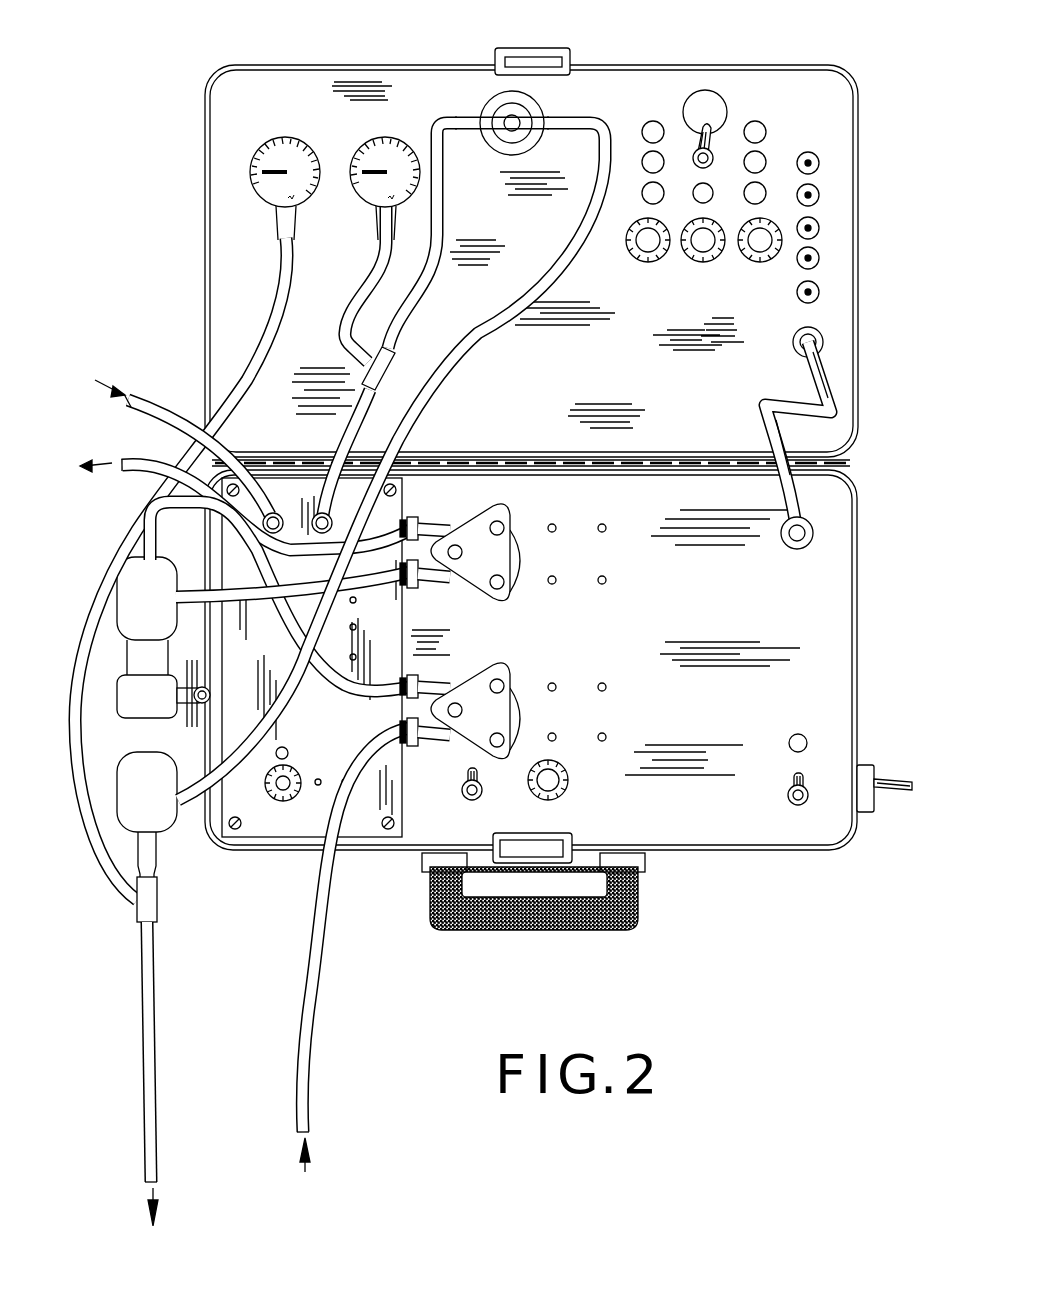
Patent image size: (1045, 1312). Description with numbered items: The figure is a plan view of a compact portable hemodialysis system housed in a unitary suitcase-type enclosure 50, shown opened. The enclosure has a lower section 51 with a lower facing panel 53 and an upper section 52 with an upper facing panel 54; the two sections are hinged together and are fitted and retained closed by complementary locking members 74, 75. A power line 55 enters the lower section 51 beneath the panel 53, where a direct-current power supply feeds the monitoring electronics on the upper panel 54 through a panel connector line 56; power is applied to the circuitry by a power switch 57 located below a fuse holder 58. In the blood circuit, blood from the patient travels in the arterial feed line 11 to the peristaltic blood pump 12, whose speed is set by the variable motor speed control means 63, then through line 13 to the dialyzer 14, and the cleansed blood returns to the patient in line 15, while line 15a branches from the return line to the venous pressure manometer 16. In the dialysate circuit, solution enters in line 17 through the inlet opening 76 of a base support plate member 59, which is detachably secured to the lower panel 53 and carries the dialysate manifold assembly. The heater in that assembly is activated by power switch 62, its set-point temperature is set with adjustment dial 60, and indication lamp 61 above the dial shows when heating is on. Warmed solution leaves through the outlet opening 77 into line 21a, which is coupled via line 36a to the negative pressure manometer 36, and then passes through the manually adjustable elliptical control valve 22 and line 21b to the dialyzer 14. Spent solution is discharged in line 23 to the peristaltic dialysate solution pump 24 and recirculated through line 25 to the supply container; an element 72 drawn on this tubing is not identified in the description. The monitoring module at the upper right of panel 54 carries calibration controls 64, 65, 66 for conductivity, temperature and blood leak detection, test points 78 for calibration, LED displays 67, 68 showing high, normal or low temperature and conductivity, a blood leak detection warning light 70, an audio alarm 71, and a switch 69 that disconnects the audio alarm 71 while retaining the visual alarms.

The arterial feed line 11 is at (312, 1020).
The peristaltic blood pump 12 is at (498, 670).
The line 13 is at (338, 684).
The dialyzer 14 is at (160, 822).
The blood return line 15 is at (155, 1020).
The line 15a is at (104, 870).
The venous pressure manometer 16 is at (285, 138).
The line 17 is at (219, 446).
The line 21a is at (427, 270).
The line 21b is at (472, 340).
The elliptical control valve 22 is at (536, 108).
The line 23 is at (368, 579).
The peristaltic dialysate solution pump 24 is at (506, 512).
The line 25 is at (372, 546).
The negative pressure manometer 36 is at (385, 138).
The line 36a is at (376, 272).
The unitary suitcase-type enclosure 50 is at (783, 860).
The lower section 51 is at (858, 600).
The upper section 52 is at (858, 215).
The lower facing panel 53 is at (840, 655).
The upper facing panel 54 is at (842, 333).
The power line 55 is at (864, 812).
The panel connector line 56 is at (775, 402).
The power switch 57 is at (788, 793).
The fuse holder 58 is at (795, 733).
The base support plate member 59 is at (380, 835).
The adjustment dial 60 is at (295, 792).
The indication lamp 61 is at (284, 746).
The power switch 62 is at (466, 786).
The variable motor speed control means 63 is at (570, 782).
The panel calibration control 64 is at (641, 262).
The panel calibration control 65 is at (703, 262).
The panel calibration control 66 is at (761, 262).
The visual display 67 is at (633, 168).
The visual display 68 is at (766, 160).
The switch 69 is at (694, 150).
The blood leak detection warning light 70 is at (713, 194).
The audio alarm 71 is at (720, 106).
The valve 72 is at (148, 703).
The locking member 74 is at (527, 866).
The locking member 75 is at (545, 48).
The inlet opening 76 is at (275, 513).
The outlet opening 77 is at (317, 518).
The test points 78 is at (843, 172).